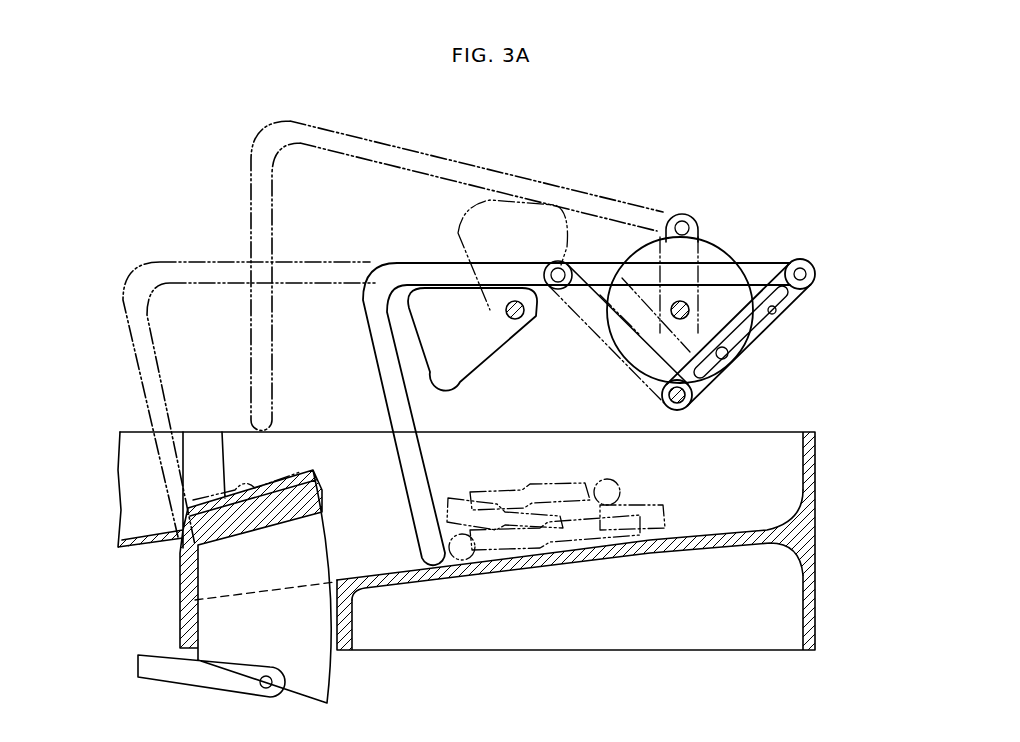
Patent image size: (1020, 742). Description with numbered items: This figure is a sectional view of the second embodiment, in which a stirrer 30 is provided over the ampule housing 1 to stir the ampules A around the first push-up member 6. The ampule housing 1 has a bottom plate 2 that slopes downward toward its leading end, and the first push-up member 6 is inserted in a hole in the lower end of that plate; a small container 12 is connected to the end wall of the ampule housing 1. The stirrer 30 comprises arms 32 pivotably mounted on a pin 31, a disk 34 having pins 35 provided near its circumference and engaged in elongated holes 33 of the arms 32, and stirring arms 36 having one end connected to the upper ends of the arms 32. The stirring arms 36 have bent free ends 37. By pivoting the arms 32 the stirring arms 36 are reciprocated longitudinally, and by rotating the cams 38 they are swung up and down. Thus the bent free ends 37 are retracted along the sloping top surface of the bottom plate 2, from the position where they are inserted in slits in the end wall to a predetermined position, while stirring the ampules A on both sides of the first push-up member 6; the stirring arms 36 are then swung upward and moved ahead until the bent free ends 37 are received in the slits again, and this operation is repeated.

The ampule housing 1 is at (795, 436).
The bottom plate 2 is at (645, 552).
The first push-up member 6 is at (327, 668).
The small container 12 is at (132, 428).
The stirrer 30 is at (748, 248).
The pin 31 is at (692, 400).
The arms 32 is at (813, 295).
The elongated holes 33 is at (775, 315).
The disk 34 is at (622, 332).
The pins 35 is at (728, 356).
The stirring arms 36 is at (599, 275).
The bent free ends 37 is at (386, 360).
The cams 38 is at (425, 305).
The ampules A is at (665, 513).